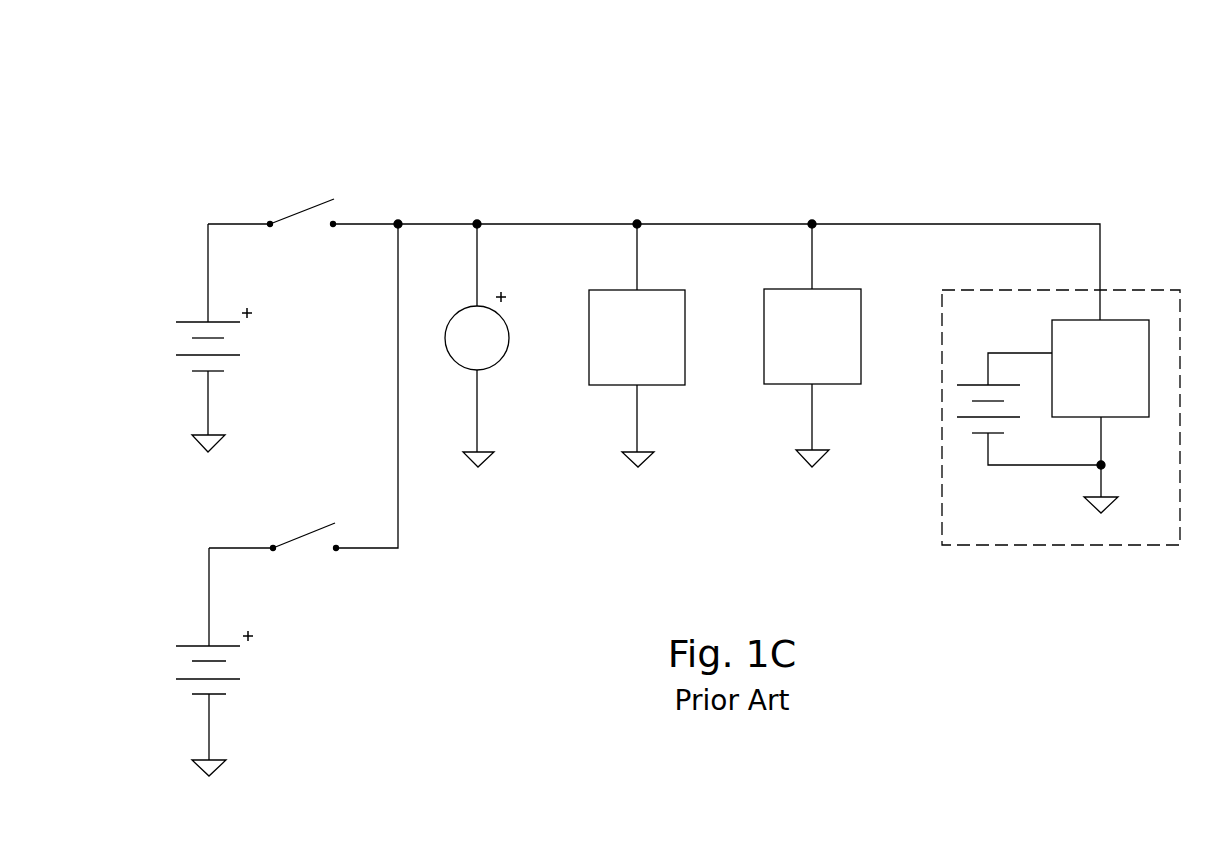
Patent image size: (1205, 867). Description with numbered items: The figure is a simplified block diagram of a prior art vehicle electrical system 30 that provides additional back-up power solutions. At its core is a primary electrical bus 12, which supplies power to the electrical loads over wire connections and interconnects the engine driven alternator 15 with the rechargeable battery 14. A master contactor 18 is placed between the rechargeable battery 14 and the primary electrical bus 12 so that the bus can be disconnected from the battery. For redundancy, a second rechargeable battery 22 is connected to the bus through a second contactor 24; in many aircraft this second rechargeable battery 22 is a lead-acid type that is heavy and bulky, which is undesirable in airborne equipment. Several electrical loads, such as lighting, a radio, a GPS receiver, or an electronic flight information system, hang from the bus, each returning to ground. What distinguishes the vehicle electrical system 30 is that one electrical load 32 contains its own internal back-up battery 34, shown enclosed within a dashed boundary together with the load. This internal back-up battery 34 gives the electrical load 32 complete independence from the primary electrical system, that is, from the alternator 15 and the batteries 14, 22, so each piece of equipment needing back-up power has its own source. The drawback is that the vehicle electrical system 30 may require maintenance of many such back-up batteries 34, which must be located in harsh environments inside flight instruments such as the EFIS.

The primary electrical bus 12 is at (558, 224).
The rechargeable battery 14 is at (186, 320).
The engine driven alternator 15 is at (510, 334).
The master contactor 18 is at (311, 207).
The second rechargeable battery 22 is at (186, 645).
The second contactor 24 is at (313, 530).
The vehicle electrical system 30 is at (1084, 141).
The electrical load 32 is at (1135, 403).
The internal back-up battery 34 is at (967, 385).